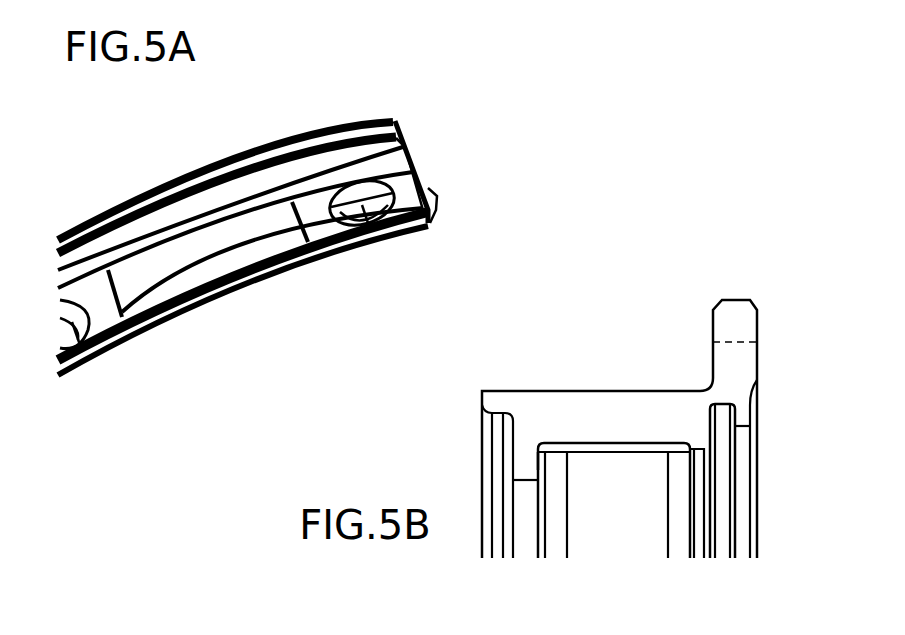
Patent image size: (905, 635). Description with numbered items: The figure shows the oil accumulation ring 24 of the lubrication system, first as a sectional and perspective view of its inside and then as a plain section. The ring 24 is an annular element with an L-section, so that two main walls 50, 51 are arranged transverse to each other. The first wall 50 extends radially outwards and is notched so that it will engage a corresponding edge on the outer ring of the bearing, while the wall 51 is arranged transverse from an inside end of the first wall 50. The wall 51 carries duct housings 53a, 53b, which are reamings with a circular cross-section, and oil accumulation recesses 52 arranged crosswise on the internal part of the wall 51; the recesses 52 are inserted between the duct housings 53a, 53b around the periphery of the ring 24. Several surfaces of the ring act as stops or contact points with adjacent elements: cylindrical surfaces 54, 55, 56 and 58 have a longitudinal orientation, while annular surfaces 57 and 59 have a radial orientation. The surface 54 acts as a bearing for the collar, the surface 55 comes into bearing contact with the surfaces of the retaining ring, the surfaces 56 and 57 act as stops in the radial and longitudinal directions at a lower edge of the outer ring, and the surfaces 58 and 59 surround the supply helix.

In FIG. 5A, the oil accumulation ring 24 is at (423, 95).
In FIG. 5B, the oil accumulation ring 24 is at (768, 262).
In FIG. 5B, the first wall 50 is at (745, 323).
In FIG. 5B, the wall 51 is at (540, 402).
In FIG. 5A, the oil accumulation recesses 52 is at (207, 243).
In FIG. 5B, the oil accumulation recesses 52 is at (598, 437).
In FIG. 5A, the duct housing 53a is at (353, 190).
In FIG. 5A, the duct housing 53b is at (82, 360).
In FIG. 5B, the cylindrical surface 54 is at (678, 380).
In FIG. 5B, the cylindrical surface 55 is at (737, 290).
In FIG. 5B, the cylindrical surface 56 is at (745, 433).
In FIG. 5B, the annular surface 57 is at (716, 443).
In FIG. 5B, the cylindrical surface 58 is at (703, 464).
In FIG. 5B, the annular surface 59 is at (545, 470).